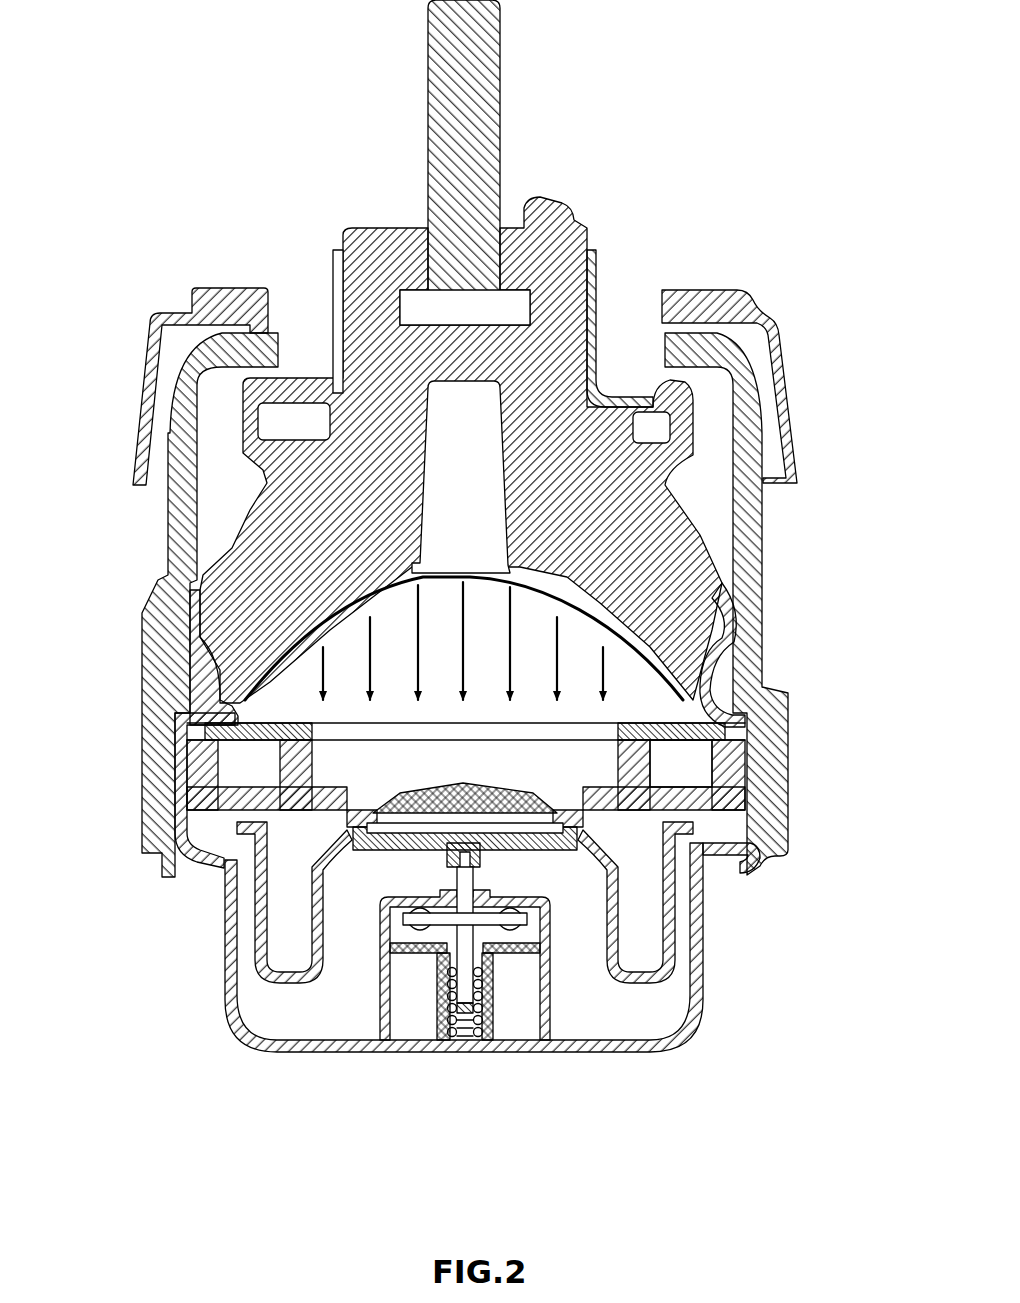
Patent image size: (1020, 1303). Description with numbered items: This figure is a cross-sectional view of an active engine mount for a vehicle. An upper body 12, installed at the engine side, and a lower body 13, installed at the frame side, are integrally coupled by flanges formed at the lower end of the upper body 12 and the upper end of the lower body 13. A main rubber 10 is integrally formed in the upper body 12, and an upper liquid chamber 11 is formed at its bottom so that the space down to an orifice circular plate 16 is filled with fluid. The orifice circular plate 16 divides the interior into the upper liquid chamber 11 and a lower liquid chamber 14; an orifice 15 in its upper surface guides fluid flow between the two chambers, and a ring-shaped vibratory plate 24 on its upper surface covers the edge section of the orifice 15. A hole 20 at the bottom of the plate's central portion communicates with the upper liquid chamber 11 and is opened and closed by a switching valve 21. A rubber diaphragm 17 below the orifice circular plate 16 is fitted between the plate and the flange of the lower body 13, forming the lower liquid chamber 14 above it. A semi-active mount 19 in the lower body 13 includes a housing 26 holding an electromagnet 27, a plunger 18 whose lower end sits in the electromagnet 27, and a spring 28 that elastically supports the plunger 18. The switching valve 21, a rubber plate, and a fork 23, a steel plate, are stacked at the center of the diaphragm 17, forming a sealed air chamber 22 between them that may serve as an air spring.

The main rubber 10 is at (700, 470).
The upper liquid chamber 11 is at (585, 640).
The upper body 12 is at (773, 311).
The lower body 13 is at (504, 1011).
The lower liquid chamber 14 is at (287, 1010).
The orifice 15 is at (528, 768).
The orifice circular plate 16 is at (690, 763).
The diaphragm 17 is at (697, 1032).
The plunger 18 is at (430, 953).
The semi-active mount 19 is at (495, 1013).
The hole 20 is at (613, 850).
The switching valve 21 is at (370, 830).
The sealed air chamber 22 is at (497, 825).
The fork 23 is at (557, 853).
The vibratory plate 24 is at (182, 777).
The housing 26 is at (580, 925).
The electromagnet 27 is at (520, 1010).
The spring 28 is at (461, 970).